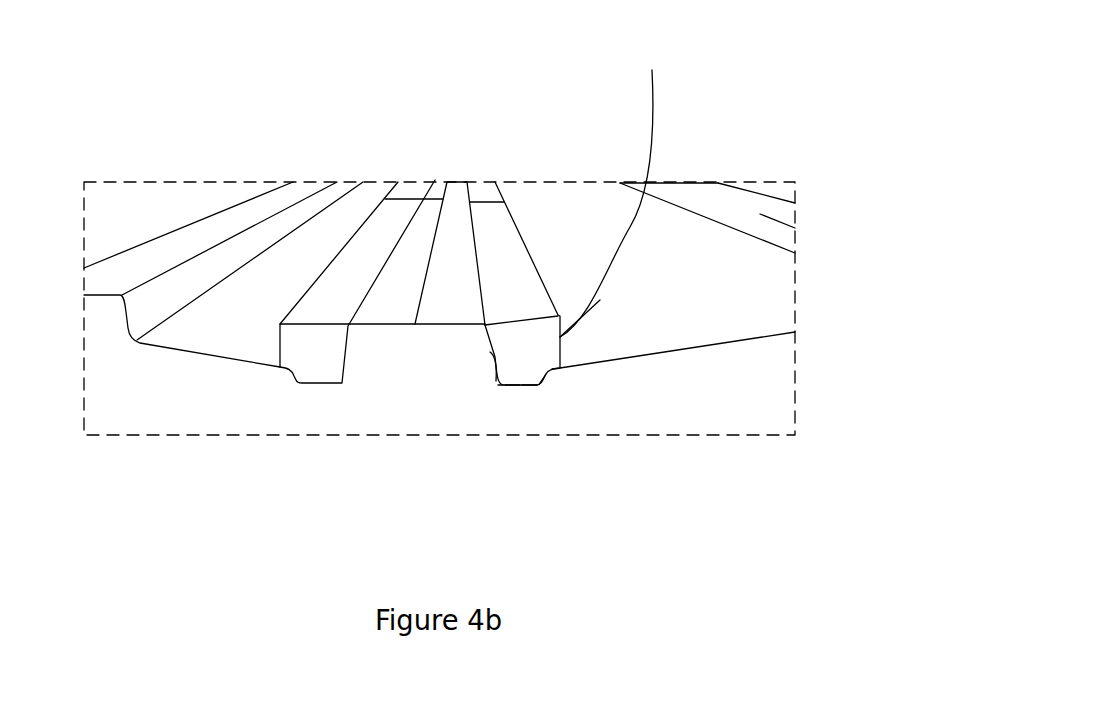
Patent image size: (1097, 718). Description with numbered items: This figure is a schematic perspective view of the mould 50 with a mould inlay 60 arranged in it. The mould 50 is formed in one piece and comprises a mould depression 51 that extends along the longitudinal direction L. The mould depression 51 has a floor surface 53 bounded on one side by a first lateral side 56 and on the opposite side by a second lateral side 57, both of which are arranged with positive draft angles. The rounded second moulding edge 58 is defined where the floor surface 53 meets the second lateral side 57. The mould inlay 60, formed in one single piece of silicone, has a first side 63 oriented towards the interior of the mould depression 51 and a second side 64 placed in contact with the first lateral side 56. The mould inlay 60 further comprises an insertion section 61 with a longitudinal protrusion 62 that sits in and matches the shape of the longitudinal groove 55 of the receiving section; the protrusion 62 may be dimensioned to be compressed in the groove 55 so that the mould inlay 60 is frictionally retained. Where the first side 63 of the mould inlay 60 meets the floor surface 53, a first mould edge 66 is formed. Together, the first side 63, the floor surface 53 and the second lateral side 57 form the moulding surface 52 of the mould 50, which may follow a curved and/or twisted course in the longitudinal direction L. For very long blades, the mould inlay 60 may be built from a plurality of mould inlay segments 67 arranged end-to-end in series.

The longitudinal direction L is at (443, 199).
The mould 50 is at (462, 415).
The mould depression 51 is at (676, 180).
The moulding surface 52 is at (599, 213).
The floor surface 53 is at (611, 184).
The longitudinal groove 55 is at (516, 385).
The first lateral side 56 is at (493, 385).
The second lateral side 57 is at (777, 220).
The second moulding edge 58 is at (735, 230).
The mould inlay 60 is at (514, 258).
The insertion section 61 is at (547, 384).
The longitudinal protrusion 62 is at (528, 385).
The first side 63 is at (633, 265).
The second side 64 is at (487, 340).
The first mould edge 66 is at (562, 366).
The mould inlay segments 67 is at (490, 227).